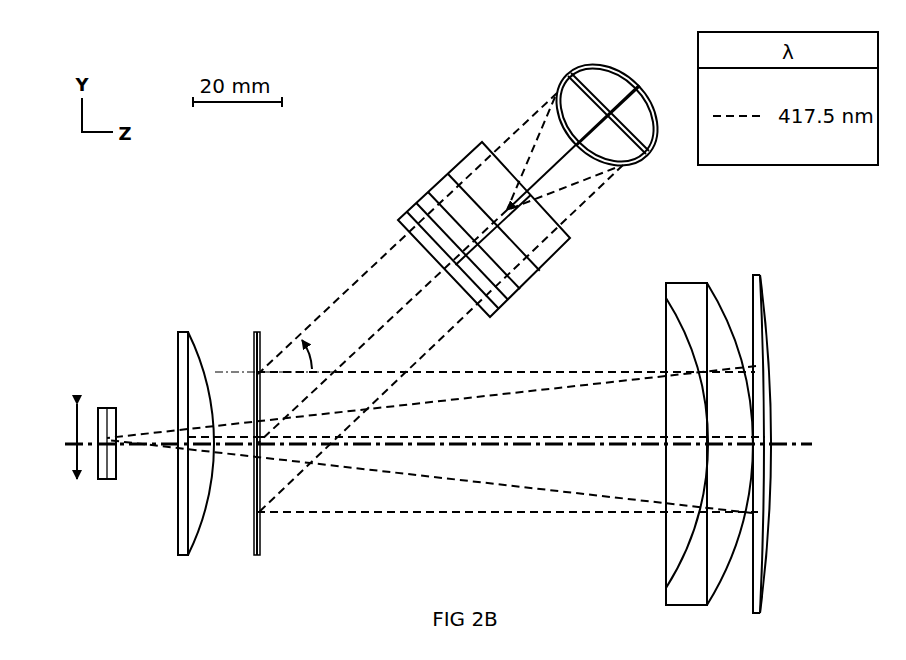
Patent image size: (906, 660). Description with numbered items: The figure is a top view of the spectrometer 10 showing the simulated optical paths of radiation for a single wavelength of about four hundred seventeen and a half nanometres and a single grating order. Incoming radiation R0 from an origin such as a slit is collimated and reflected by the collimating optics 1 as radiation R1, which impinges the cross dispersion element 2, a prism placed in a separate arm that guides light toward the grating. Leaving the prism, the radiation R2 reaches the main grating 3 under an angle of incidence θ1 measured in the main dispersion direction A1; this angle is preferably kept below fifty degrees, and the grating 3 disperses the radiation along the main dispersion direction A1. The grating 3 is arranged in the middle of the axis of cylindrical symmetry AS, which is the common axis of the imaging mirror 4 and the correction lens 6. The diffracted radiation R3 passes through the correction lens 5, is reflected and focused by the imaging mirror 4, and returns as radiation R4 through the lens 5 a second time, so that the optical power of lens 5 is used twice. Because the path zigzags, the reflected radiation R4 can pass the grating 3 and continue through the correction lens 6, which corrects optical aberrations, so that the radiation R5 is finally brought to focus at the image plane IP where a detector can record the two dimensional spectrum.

The collimating optics 1 is at (641, 73).
The cross dispersion element 2 is at (446, 162).
The main grating 3 is at (255, 325).
The imaging mirror 4 is at (755, 268).
The correction lens 5 is at (697, 272).
The correction lens 6 is at (181, 325).
The spectrometer 10 is at (123, 220).
The image plane IP is at (108, 402).
The axis of cylindrical symmetry AS is at (458, 444).
The main dispersion direction A1 is at (75, 425).
The incoming radiation R0 is at (567, 192).
The collimated radiation R1 is at (503, 136).
The cross-dispersed radiation R2 is at (332, 300).
The dispersed radiation R3 is at (457, 383).
The reflected radiation R4 is at (412, 418).
The focused radiation R5 is at (142, 432).